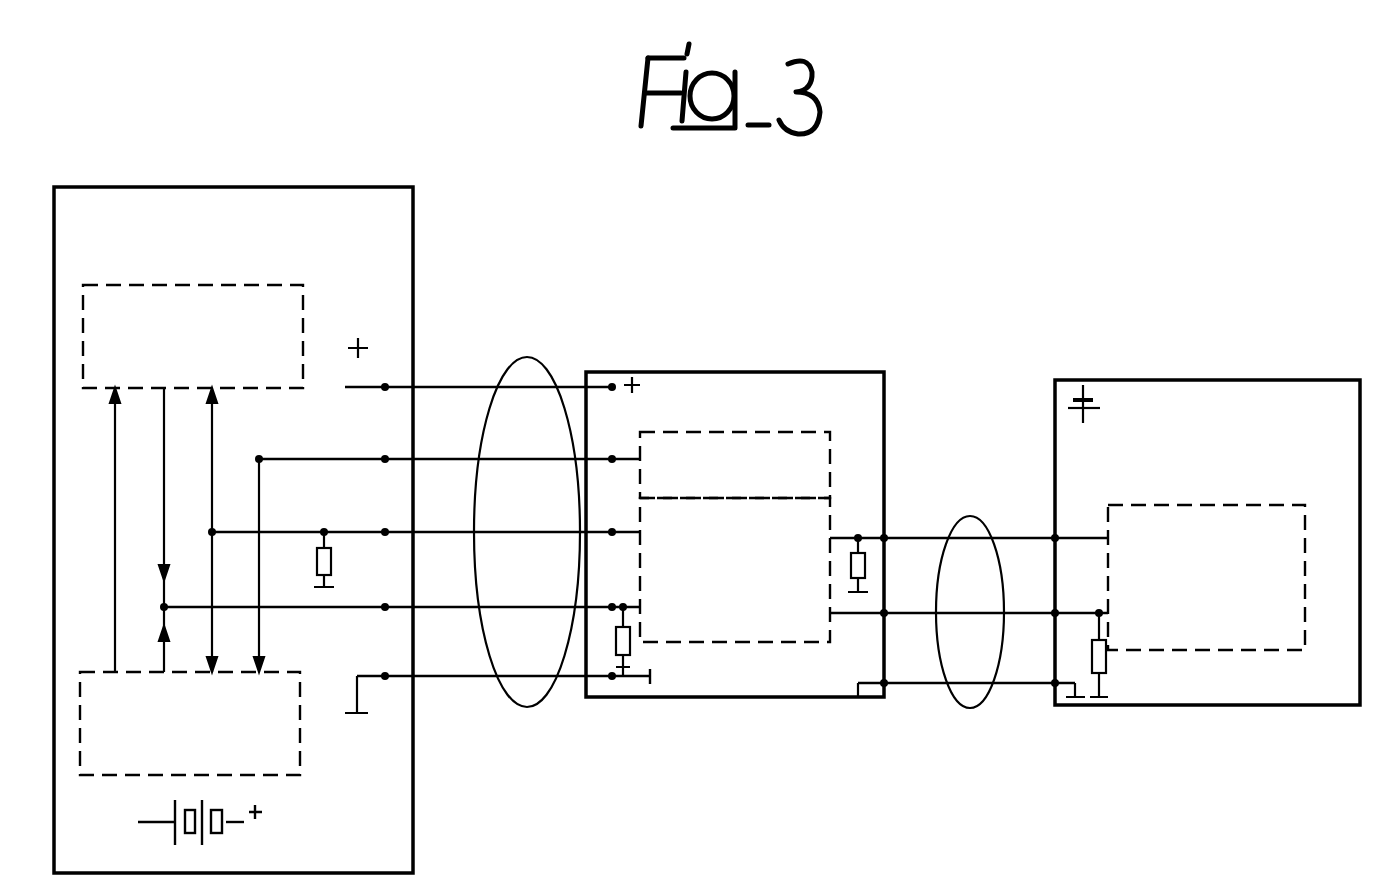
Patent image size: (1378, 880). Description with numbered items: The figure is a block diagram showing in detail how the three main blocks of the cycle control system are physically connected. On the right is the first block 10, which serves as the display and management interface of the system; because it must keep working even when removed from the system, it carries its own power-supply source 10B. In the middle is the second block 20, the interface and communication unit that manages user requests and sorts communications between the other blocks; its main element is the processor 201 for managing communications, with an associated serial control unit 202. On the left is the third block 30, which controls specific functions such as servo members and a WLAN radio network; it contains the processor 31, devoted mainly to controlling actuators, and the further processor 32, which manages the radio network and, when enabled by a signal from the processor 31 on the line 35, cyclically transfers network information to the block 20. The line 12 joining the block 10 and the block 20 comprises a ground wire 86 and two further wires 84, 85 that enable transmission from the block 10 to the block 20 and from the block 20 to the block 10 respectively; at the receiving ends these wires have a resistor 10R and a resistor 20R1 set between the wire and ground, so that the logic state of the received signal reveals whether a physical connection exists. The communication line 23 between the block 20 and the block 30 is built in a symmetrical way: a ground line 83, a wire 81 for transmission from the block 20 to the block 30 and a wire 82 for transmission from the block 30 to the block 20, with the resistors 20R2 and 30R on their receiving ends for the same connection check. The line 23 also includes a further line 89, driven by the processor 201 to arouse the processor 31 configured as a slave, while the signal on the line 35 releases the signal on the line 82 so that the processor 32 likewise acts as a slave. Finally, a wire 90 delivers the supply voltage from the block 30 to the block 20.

The third block 30 is at (372, 205).
The further processor 32 is at (270, 297).
The processor 31 is at (270, 755).
The line 35 is at (115, 582).
The resistor 30R is at (318, 548).
The wire 90 is at (432, 387).
The further line 89 is at (430, 459).
The wire 81 is at (420, 532).
The wire 82 is at (432, 607).
The ground line 83 is at (563, 678).
The communication line 23 is at (530, 357).
The second block 20 is at (793, 385).
The processor 201 is at (695, 440).
The serial control unit 202 is at (765, 630).
The resistor 20R2 is at (625, 655).
The resistor 20R1 is at (862, 553).
The wire 84 is at (1010, 538).
The wire 85 is at (908, 613).
The ground wire 86 is at (918, 685).
The line 12 is at (972, 706).
The first block 10 is at (1248, 393).
The power-supply source 10B is at (1115, 420).
The resistor 10R is at (1107, 658).